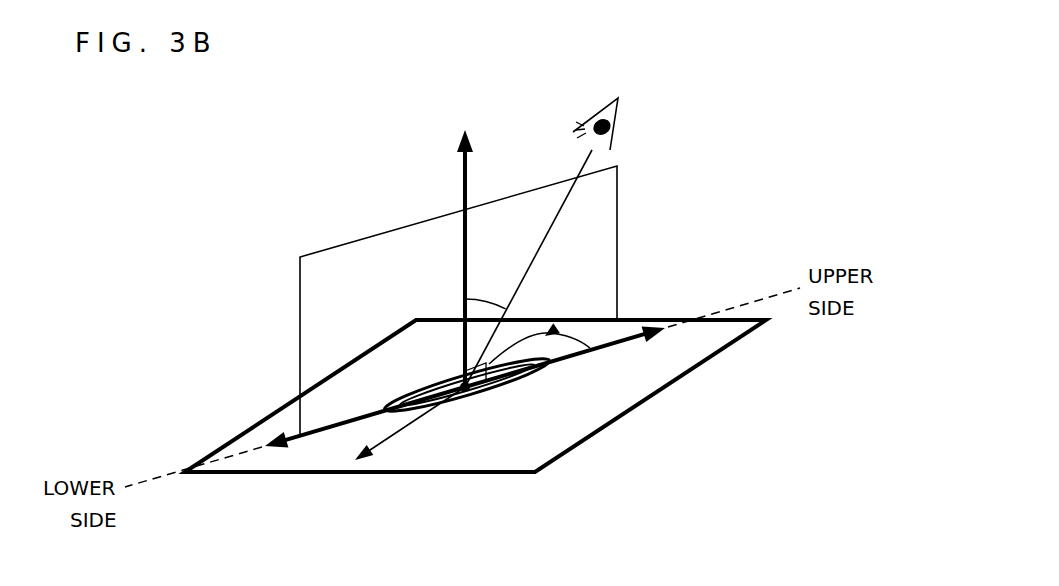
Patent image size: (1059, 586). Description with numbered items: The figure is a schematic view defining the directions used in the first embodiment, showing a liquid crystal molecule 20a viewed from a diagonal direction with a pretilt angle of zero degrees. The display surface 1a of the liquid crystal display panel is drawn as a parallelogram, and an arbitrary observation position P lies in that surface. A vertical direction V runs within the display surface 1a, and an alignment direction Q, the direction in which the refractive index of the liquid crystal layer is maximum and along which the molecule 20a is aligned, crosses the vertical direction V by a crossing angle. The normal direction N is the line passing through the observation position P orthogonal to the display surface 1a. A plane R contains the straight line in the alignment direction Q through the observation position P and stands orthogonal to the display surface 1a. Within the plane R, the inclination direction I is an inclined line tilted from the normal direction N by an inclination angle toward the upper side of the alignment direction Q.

The display surface 1a is at (248, 434).
The liquid crystal molecule 20a is at (521, 384).
The normal direction N is at (463, 178).
The plane R is at (320, 251).
The inclination direction I is at (581, 170).
The alignment direction Q is at (637, 338).
The observation position P is at (470, 393).
The vertical direction V is at (390, 437).